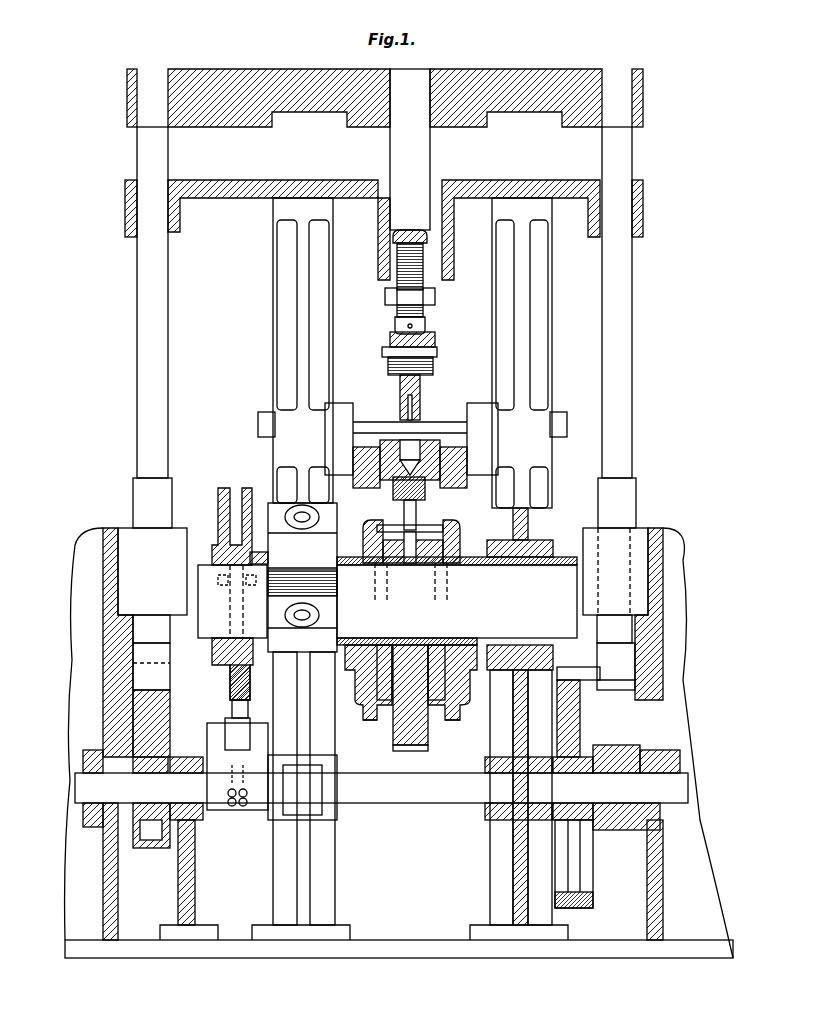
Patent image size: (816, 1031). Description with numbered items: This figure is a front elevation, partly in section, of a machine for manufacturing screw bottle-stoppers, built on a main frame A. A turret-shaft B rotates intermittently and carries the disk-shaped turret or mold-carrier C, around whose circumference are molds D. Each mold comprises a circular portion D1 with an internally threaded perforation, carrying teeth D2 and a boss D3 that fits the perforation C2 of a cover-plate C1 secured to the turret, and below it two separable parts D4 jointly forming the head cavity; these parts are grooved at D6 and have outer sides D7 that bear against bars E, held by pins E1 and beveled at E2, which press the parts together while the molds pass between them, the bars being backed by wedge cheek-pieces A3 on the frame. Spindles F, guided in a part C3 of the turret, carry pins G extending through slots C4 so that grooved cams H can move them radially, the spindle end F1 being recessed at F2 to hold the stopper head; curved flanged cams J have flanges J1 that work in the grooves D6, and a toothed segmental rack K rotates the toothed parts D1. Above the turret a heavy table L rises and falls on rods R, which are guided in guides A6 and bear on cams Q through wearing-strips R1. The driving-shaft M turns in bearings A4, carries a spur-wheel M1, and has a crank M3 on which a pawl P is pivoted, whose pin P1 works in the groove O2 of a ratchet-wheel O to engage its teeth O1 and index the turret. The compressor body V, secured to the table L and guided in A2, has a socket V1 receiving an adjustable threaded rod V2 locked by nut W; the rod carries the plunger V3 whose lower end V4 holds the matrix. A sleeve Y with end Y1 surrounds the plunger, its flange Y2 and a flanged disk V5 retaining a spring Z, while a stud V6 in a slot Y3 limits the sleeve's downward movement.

The main frame A is at (399, 556).
The guide A2 is at (462, 250).
The cheek-pieces A3 is at (411, 439).
The bearings A4 is at (500, 778).
The guides A6 is at (383, 642).
The turret-shaft B is at (457, 601).
The turret or mold-carrier C is at (372, 624).
The cover-plate C1 is at (393, 442).
The perforation C2 is at (428, 503).
The part of the turret C3 is at (420, 572).
The slots C4 is at (438, 512).
The molds D is at (410, 451).
The circular portion D1 is at (432, 445).
The teeth D2 is at (440, 452).
The boss D3 is at (461, 458).
The mold parts D4 is at (400, 420).
The grooves D6 is at (455, 500).
The outer sides D7 is at (414, 437).
The bars E is at (410, 467).
The pins E1 is at (403, 493).
The beveled sides E2 is at (353, 490).
The spindles F is at (400, 580).
The spindle end F1 is at (393, 490).
The recess F2 is at (387, 502).
The pin G is at (400, 512).
The grooved cams H is at (478, 535).
The cams J is at (411, 739).
The flanges J1 is at (380, 728).
The toothed segmental rack K is at (440, 740).
The table L is at (385, 103).
The driving-shaft M is at (381, 788).
The spur-wheel M1 is at (571, 864).
The crank M3 is at (226, 764).
The ratchet-wheel O is at (218, 521).
The teeth O1 is at (218, 500).
The groove O2 is at (231, 552).
The pawl P is at (232, 678).
The transverse pin P1 is at (228, 578).
The cams Q is at (670, 703).
The rods R is at (384, 385).
The wearing-strips R1 is at (170, 688).
The compressor body V is at (410, 149).
The screw-threaded socket V1 is at (397, 275).
The screw-threaded rod V2 is at (395, 298).
The plunger V3 is at (415, 378).
The lower end of plunger V4 is at (412, 410).
The flanged disk V5 is at (437, 352).
The stud V6 is at (417, 392).
The lock-nut W is at (436, 296).
The sleeve Y is at (400, 398).
The sleeve end Y1 is at (402, 412).
The flange Y2 is at (404, 380).
The slot Y3 is at (411, 425).
The spring Z is at (433, 366).